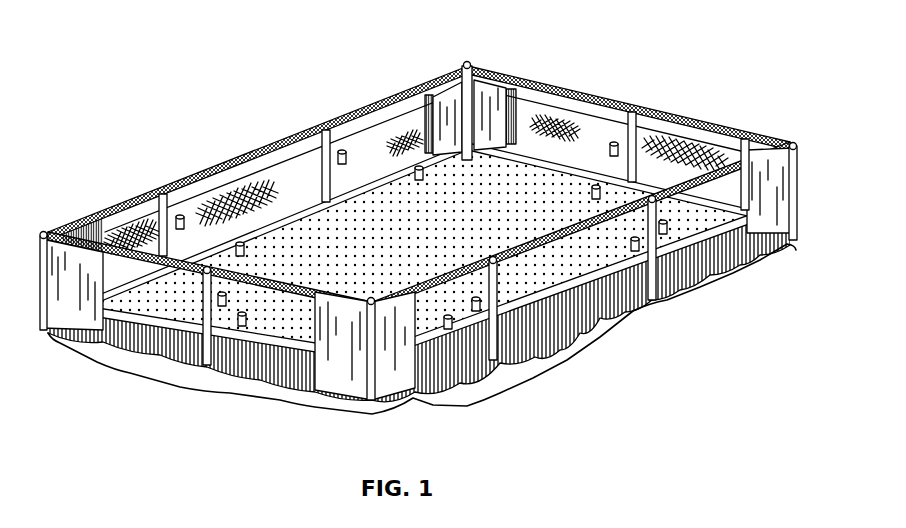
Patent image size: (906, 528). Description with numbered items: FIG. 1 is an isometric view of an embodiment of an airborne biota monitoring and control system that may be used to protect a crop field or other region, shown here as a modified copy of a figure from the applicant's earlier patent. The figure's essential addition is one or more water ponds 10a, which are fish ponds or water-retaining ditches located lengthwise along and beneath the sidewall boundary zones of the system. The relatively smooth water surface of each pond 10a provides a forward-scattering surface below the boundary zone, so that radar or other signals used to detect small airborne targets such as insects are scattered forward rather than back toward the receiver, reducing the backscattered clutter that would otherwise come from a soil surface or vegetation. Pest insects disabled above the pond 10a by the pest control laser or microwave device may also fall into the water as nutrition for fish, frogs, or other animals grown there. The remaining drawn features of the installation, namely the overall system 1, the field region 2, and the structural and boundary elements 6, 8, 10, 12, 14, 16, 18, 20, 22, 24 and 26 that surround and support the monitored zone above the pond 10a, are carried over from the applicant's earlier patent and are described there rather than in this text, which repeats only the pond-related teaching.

The enclosure assembly 1 is at (416, 223).
The enclosure 2 is at (246, 203).
The post 6 is at (86, 230).
The flap panel 8 is at (65, 232).
The base pad 10 is at (603, 316).
The water pond 10a is at (187, 388).
The skirt 12 is at (622, 320).
The hem edge 14 is at (752, 285).
The top rail 16 is at (300, 120).
The mesh 18 is at (155, 188).
The mesh tuft 20 is at (476, 138).
The clip 22 is at (425, 178).
The fastener strip 24 is at (452, 100).
The lower rail line 26 is at (218, 188).